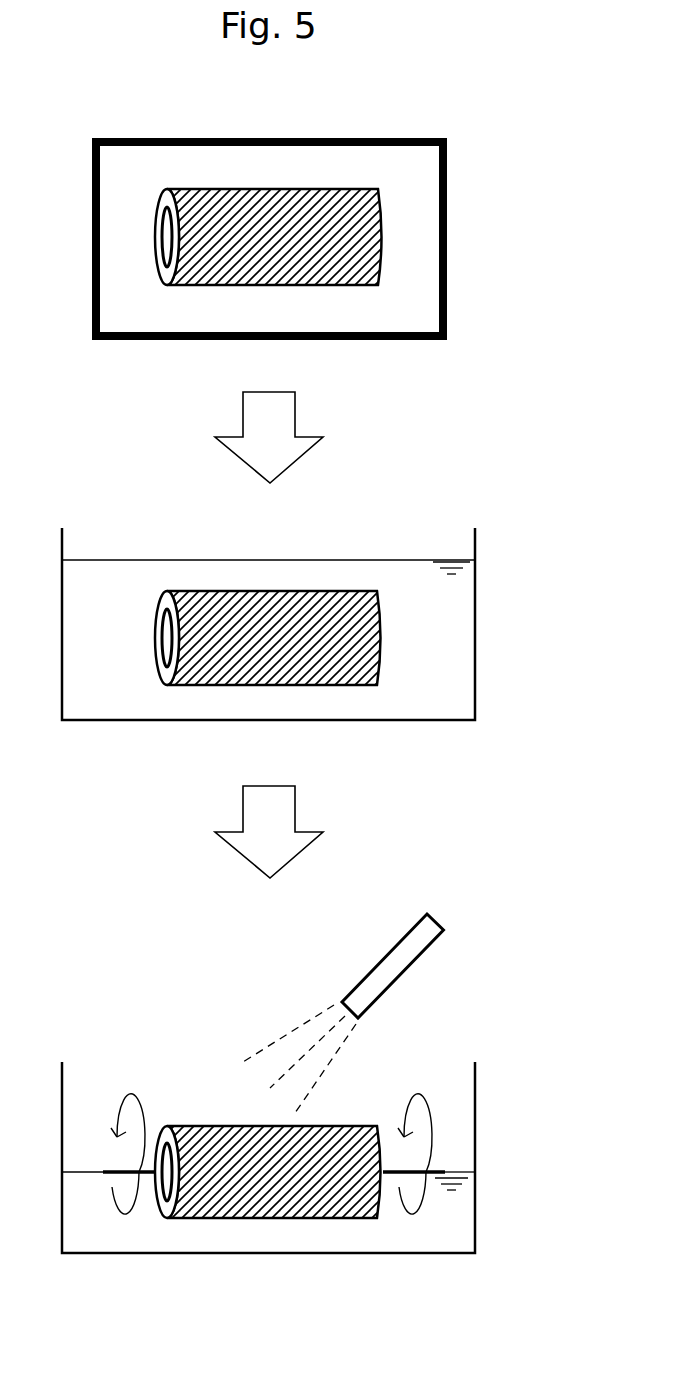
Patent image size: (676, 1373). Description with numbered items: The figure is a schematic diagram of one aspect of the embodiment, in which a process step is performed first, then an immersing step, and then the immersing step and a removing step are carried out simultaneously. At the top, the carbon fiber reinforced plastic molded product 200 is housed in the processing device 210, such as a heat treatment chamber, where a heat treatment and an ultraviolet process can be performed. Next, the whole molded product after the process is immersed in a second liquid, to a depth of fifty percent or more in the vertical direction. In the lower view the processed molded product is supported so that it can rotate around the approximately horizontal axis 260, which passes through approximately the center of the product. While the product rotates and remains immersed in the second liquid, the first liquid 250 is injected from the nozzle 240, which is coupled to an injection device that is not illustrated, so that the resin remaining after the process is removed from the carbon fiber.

The carbon fiber reinforced plastic molded product 200 is at (384, 238).
The processing device 210 is at (447, 293).
The nozzle 240 is at (393, 970).
The first liquid 250 is at (333, 1070).
The approximately horizontal axis 260 is at (433, 1170).